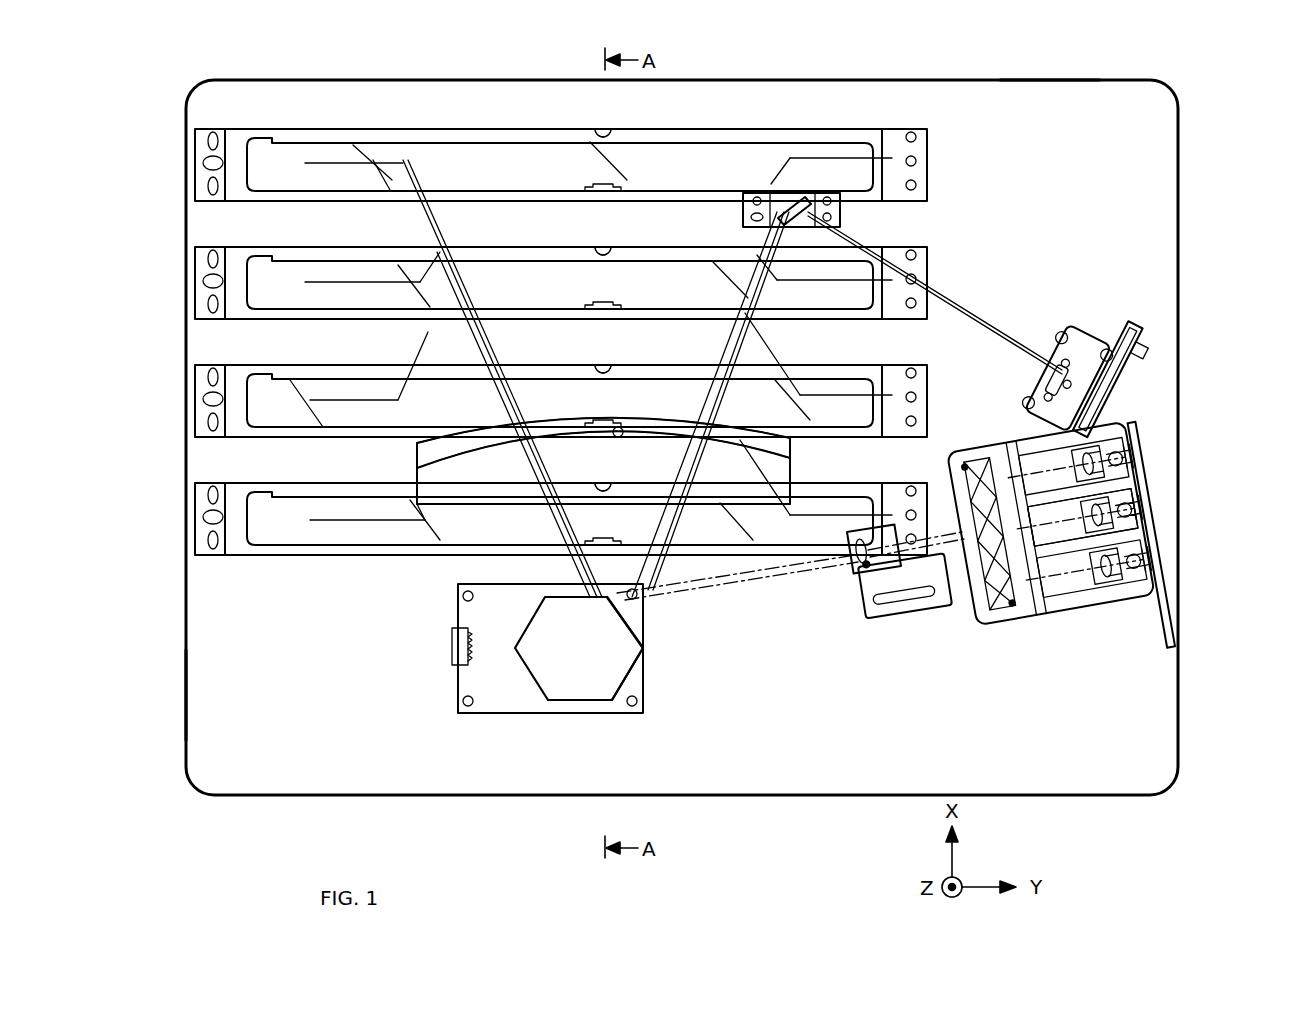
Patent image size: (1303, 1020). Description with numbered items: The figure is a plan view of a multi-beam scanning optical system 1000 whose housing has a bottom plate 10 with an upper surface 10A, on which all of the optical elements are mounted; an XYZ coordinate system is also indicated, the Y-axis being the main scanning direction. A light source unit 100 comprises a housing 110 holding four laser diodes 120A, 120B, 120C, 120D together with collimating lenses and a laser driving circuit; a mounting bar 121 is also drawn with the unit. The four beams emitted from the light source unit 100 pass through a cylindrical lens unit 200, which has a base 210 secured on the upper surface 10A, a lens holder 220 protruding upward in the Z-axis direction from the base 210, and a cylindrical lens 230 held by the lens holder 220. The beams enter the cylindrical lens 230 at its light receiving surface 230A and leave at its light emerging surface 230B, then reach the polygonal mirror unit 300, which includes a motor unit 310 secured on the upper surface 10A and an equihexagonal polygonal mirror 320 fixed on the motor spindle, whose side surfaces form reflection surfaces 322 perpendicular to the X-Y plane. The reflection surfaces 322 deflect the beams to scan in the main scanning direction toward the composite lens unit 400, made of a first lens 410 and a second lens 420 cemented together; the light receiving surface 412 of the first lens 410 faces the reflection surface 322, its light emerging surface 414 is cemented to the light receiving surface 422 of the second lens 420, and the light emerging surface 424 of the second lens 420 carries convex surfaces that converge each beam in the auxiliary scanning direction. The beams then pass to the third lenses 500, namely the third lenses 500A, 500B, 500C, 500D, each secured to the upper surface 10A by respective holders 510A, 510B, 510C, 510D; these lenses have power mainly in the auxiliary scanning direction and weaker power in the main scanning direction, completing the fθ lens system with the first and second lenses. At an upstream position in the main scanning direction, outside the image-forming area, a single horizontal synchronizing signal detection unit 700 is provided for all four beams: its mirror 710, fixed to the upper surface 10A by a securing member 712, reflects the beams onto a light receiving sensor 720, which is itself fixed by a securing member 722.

The bottom plate 10 is at (184, 646).
The upper surface 10A is at (222, 700).
The multi-beam scanning optical system 1000 is at (1212, 116).
The light source unit 100 is at (1096, 565).
The housing 110 is at (1058, 554).
The laser diode 120A is at (1079, 518).
The laser diode 120B is at (1088, 569).
The laser diode 120C is at (1070, 466).
The laser diode 120D is at (1152, 522).
The light source mounting bar 121 is at (1126, 539).
The cylindrical lens unit 200 is at (874, 604).
The base 210 is at (930, 615).
The lens holder 220 is at (880, 615).
The cylindrical lens 230 is at (845, 583).
The light receiving surface 230A is at (864, 572).
The light emerging surface 230B is at (853, 560).
The polygonal mirror unit 300 is at (577, 679).
The motor unit 310 is at (557, 712).
The polygonal mirror 320 is at (636, 678).
The reflection surface 322 is at (622, 600).
The composite lens unit 400 is at (560, 461).
The first lens 410 is at (402, 500).
The light receiving surface 412 is at (630, 505).
The light emerging surface 414 is at (548, 435).
The second lens 420 is at (405, 462).
The light receiving surface 422 is at (640, 432).
The light emerging surface 424 is at (548, 410).
The third lens 500 is at (599, 322).
The third lens 500A is at (442, 155).
The third lens 500B is at (340, 275).
The third lens 500C is at (320, 395).
The third lens 500D is at (300, 515).
The holder 510A is at (770, 130).
The holder 510B is at (640, 248).
The holder 510C is at (820, 370).
The holder 510D is at (800, 490).
The horizontal synchronizing signal detection unit 700 is at (958, 304).
The mirror 710 is at (797, 195).
The securing member 712 is at (843, 214).
The light receiving sensor 720 is at (1100, 393).
The securing member 722 is at (1122, 297).